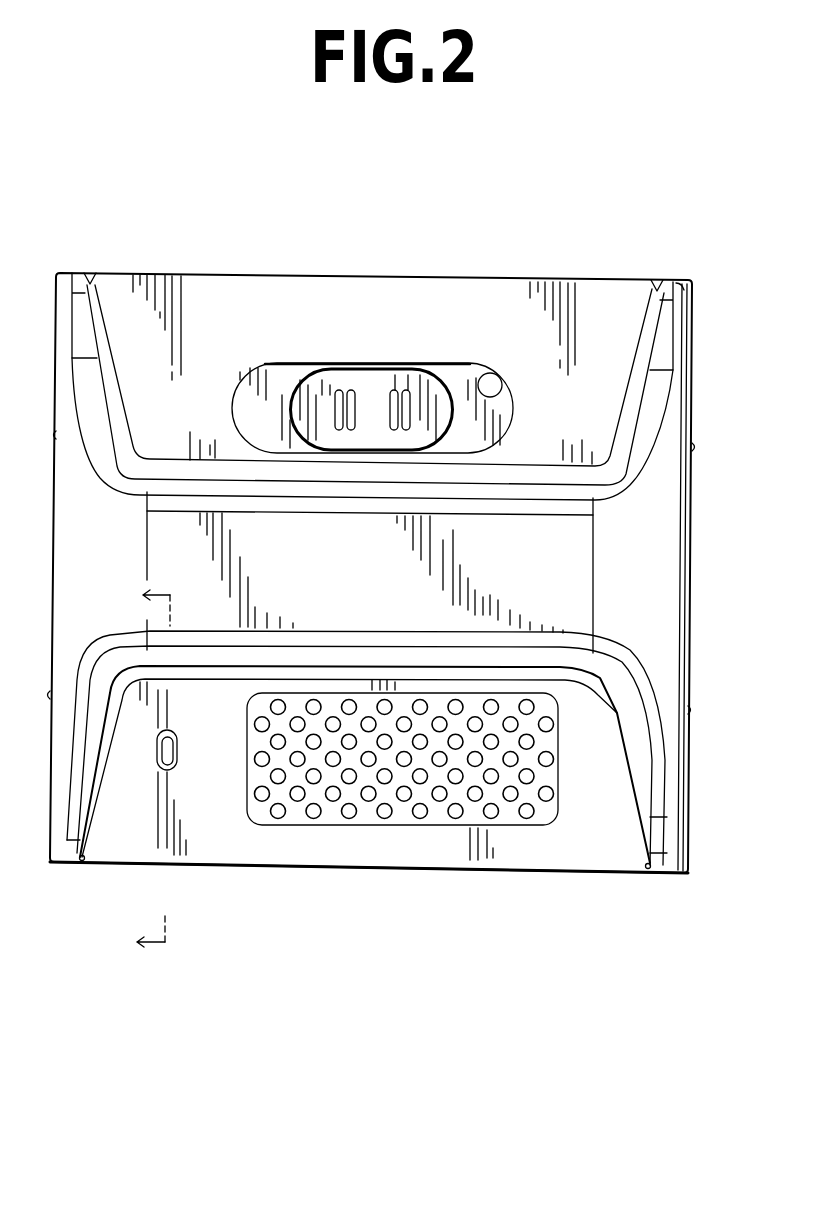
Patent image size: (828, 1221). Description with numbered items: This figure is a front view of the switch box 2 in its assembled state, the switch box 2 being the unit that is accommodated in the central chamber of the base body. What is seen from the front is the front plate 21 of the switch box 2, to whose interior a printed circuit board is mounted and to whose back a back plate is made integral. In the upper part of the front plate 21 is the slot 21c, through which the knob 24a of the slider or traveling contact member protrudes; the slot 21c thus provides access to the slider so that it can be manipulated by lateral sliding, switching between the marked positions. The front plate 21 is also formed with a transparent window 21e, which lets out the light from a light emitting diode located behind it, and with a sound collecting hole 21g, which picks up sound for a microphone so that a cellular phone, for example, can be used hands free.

The switch box 2 is at (194, 250).
The front plate 21 is at (638, 623).
The slot 21c is at (495, 385).
The transparent window 21e is at (175, 752).
The sound collecting hole 21g is at (347, 812).
The knob 24a is at (368, 387).